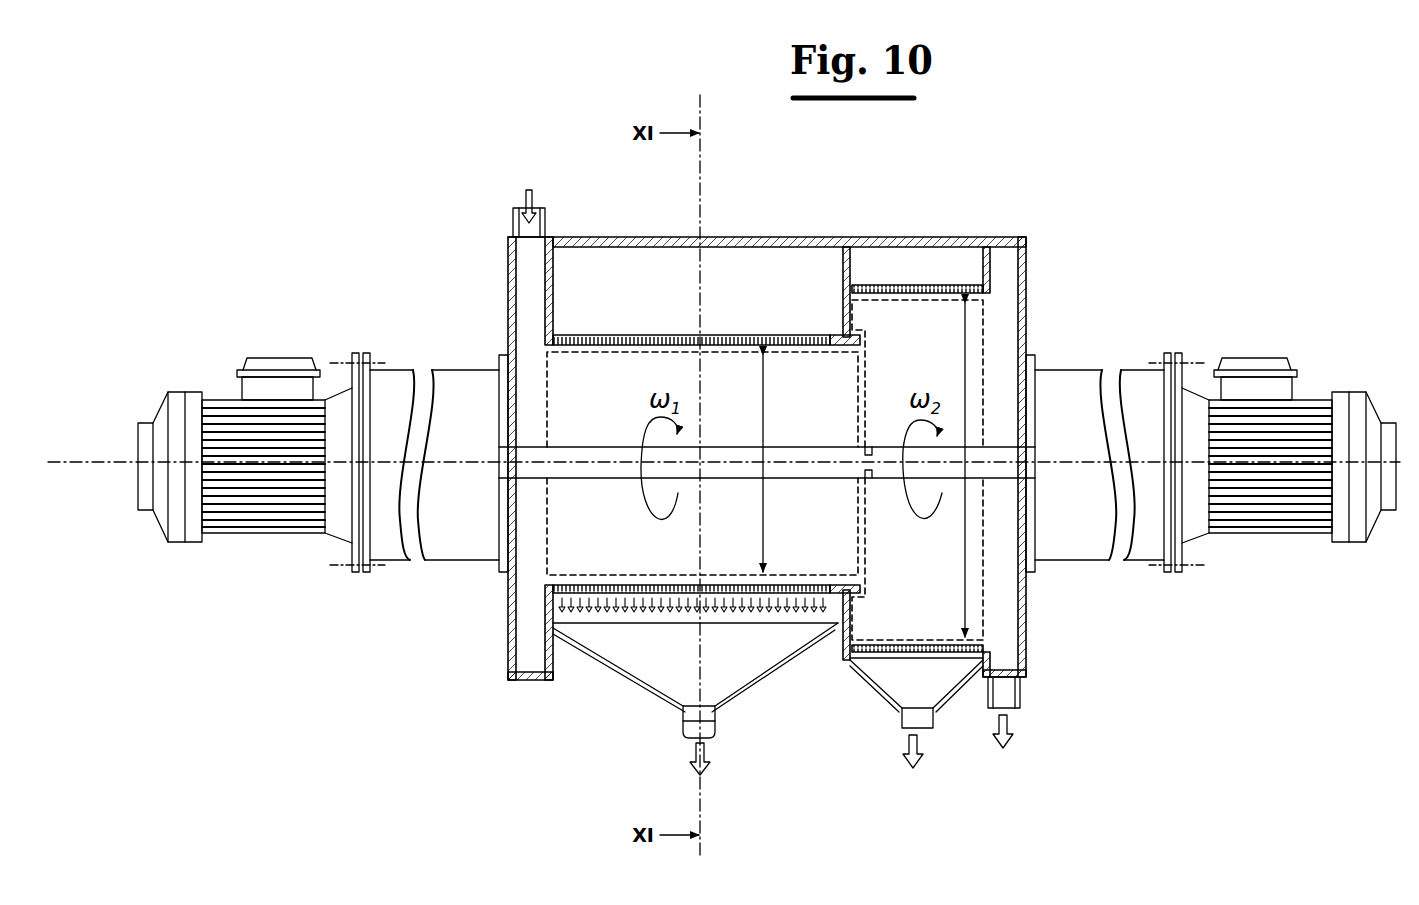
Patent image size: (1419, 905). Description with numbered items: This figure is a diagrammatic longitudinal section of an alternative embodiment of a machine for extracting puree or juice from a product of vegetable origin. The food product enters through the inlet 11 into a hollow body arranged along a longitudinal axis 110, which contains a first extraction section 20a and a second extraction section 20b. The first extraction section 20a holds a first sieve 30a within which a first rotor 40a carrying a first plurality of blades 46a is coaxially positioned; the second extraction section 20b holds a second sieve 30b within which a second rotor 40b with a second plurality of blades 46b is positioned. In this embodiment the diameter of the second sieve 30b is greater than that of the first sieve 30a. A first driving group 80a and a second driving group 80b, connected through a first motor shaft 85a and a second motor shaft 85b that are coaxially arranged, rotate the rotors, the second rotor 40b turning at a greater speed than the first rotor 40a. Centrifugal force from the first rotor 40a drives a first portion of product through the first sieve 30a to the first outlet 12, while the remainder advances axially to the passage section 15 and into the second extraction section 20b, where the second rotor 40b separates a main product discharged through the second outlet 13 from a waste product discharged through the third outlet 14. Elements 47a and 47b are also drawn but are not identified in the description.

The inlet 11 is at (511, 191).
The first outlet 12 is at (601, 632).
The second outlet 13 is at (896, 678).
The third outlet 14 is at (1018, 713).
The passage section 15 is at (847, 411).
The first extraction section 20a is at (602, 328).
The second extraction section 20b is at (931, 277).
The first sieve 30a is at (631, 304).
The second sieve 30b is at (909, 267).
The first rotor 40a is at (544, 557).
The second rotor 40b is at (993, 634).
The first plurality of blades 46a is at (536, 438).
The second plurality of blades 46b is at (975, 304).
The lower partition wall 47a is at (858, 533).
The upper partition wall 47b is at (862, 378).
The first driving group 80a is at (203, 349).
The second driving group 80b is at (1291, 560).
The first motor shaft 85a is at (565, 372).
The second motor shaft 85b is at (992, 431).
The longitudinal axis 110 is at (108, 461).